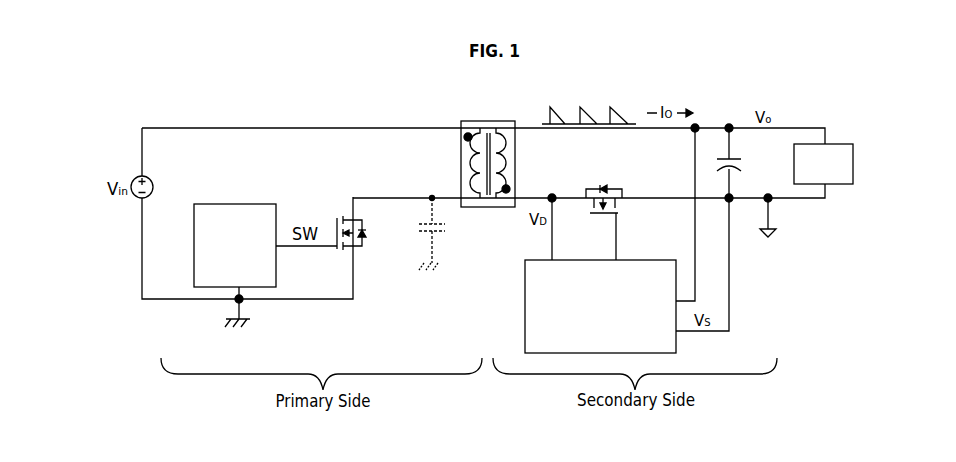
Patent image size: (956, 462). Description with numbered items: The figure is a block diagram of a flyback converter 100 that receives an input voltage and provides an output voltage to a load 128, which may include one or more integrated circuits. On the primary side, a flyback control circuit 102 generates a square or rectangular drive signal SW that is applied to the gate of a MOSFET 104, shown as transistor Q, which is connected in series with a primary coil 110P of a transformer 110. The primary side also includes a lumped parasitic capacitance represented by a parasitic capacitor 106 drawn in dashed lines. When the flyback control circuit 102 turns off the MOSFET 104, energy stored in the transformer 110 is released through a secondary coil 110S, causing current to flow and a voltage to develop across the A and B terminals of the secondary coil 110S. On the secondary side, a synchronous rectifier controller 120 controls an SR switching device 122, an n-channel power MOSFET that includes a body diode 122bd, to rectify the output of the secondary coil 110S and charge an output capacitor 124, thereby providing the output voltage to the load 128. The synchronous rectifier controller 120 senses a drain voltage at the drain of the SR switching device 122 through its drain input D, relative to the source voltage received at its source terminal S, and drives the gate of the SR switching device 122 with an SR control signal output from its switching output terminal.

The flyback converter 100 is at (696, 91).
The flyback control circuit 102 is at (238, 204).
The MOSFET 104 is at (345, 251).
The parasitic capacitor 106 is at (440, 232).
The transformer 110 is at (488, 121).
The primary coil 110P is at (473, 121).
The secondary coil 110S is at (498, 121).
The synchronous rectifier controller 120 is at (525, 293).
The SR switching device 122 is at (605, 208).
The body diode 122bd is at (600, 185).
The output capacitor 124 is at (739, 159).
The load 128 is at (853, 158).